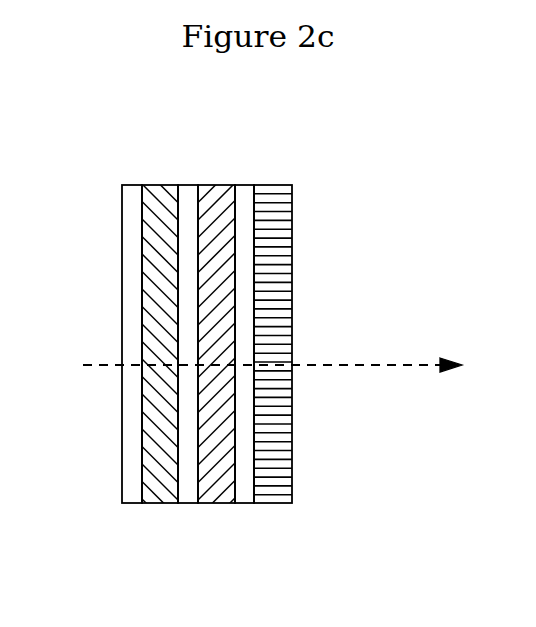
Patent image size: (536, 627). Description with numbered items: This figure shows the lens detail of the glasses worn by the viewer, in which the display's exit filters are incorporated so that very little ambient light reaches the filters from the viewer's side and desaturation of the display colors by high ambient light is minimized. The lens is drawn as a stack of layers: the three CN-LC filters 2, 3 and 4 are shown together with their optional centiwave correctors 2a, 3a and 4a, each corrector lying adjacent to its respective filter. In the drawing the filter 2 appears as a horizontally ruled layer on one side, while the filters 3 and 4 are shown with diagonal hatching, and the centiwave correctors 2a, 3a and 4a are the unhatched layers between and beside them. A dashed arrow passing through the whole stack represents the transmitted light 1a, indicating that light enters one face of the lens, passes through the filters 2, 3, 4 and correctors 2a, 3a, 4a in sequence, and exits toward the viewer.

The transmitted light 1a is at (366, 366).
The CN-LC filter 2 is at (289, 185).
The centiwave corrector 2a is at (242, 503).
The CN-LC filter 3 is at (225, 185).
The centiwave corrector 3a is at (187, 503).
The CN-LC filter 4 is at (162, 185).
The centiwave corrector 4a is at (122, 308).